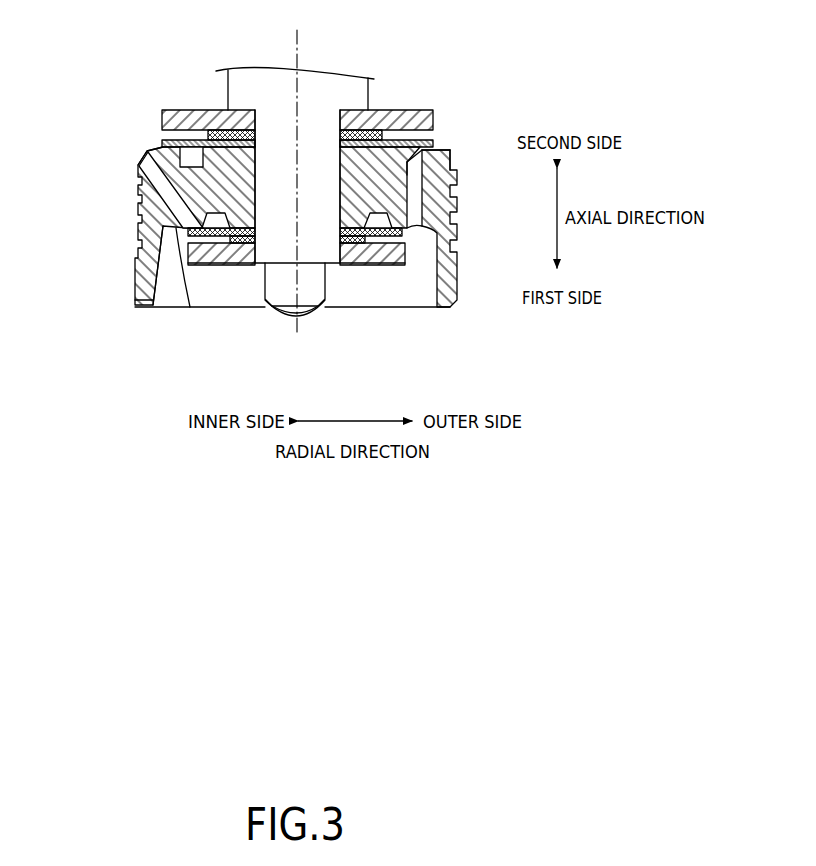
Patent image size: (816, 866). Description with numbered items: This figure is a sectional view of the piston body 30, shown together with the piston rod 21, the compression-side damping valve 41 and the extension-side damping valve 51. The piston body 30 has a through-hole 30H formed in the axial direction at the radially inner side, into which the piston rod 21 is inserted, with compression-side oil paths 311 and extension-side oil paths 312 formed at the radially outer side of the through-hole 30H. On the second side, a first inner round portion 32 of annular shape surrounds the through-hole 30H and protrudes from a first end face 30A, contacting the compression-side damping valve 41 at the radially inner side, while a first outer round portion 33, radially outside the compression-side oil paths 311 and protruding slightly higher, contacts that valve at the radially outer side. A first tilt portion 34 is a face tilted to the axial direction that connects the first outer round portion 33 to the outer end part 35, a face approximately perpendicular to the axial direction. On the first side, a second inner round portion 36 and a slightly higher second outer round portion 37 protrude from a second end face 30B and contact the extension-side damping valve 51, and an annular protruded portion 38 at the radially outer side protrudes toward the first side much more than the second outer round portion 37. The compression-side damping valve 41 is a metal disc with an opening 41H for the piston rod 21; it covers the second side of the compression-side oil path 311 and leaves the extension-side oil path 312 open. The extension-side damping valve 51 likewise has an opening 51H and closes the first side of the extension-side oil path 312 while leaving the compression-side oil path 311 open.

The piston rod 21 is at (224, 100).
The piston body 30 is at (286, 220).
The first end face 30A is at (404, 163).
The second end face 30B is at (190, 307).
The through-hole 30H is at (273, 190).
The compression-side oil path 311 is at (426, 190).
The extension-side oil path 312 is at (166, 188).
The first inner round portion 32 is at (372, 137).
The first outer round portion 33 is at (160, 151).
The first tilt portion 34 is at (437, 149).
The outer end part 35 is at (451, 152).
The second inner round portion 36 is at (356, 229).
The second outer round portion 37 is at (408, 232).
The annular protruded portion 38 is at (150, 312).
The compression-side damping valve 41 is at (165, 146).
The opening 41H is at (273, 190).
The extension-side damping valve 51 is at (163, 214).
The opening 51H is at (265, 263).